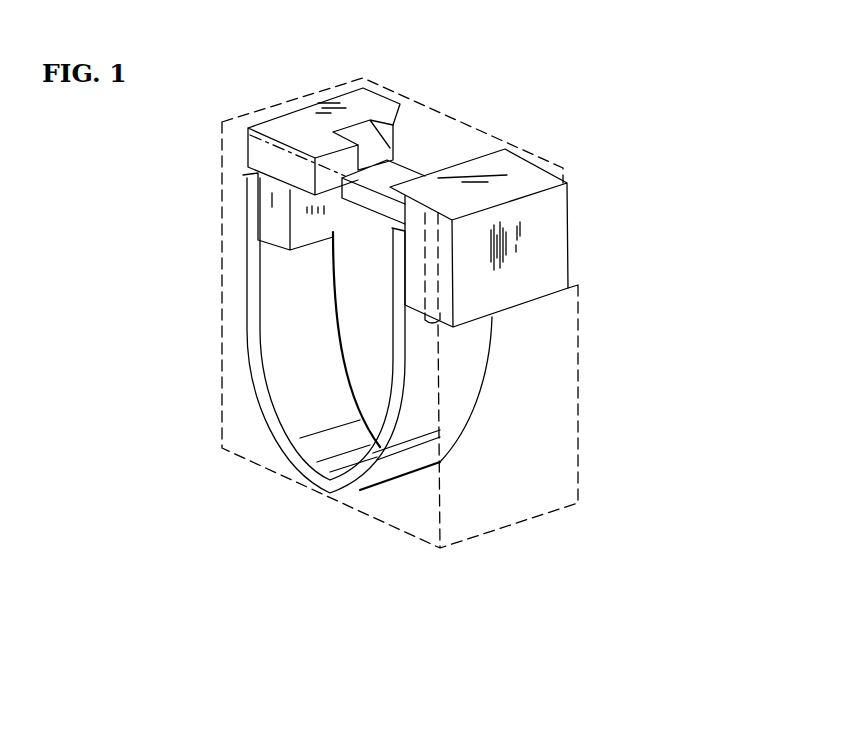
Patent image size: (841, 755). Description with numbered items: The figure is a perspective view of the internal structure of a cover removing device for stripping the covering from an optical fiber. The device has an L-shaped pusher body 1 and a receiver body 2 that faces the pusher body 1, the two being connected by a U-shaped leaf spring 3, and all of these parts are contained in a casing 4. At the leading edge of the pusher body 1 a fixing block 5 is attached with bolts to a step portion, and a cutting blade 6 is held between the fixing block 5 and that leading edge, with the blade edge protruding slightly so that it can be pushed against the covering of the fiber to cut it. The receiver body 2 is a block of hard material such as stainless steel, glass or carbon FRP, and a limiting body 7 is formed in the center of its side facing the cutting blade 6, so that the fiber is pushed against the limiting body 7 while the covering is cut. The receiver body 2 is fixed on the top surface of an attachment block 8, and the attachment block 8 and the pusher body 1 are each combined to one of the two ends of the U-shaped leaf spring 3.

The pusher body 1 is at (513, 177).
The receiver body 2 is at (380, 110).
The U-shaped leaf spring 3 is at (297, 348).
The casing 4 is at (583, 458).
The fixing block 5 is at (466, 150).
The cutting blade 6 is at (330, 278).
The limiting body 7 is at (430, 143).
The attachment block 8 is at (262, 190).